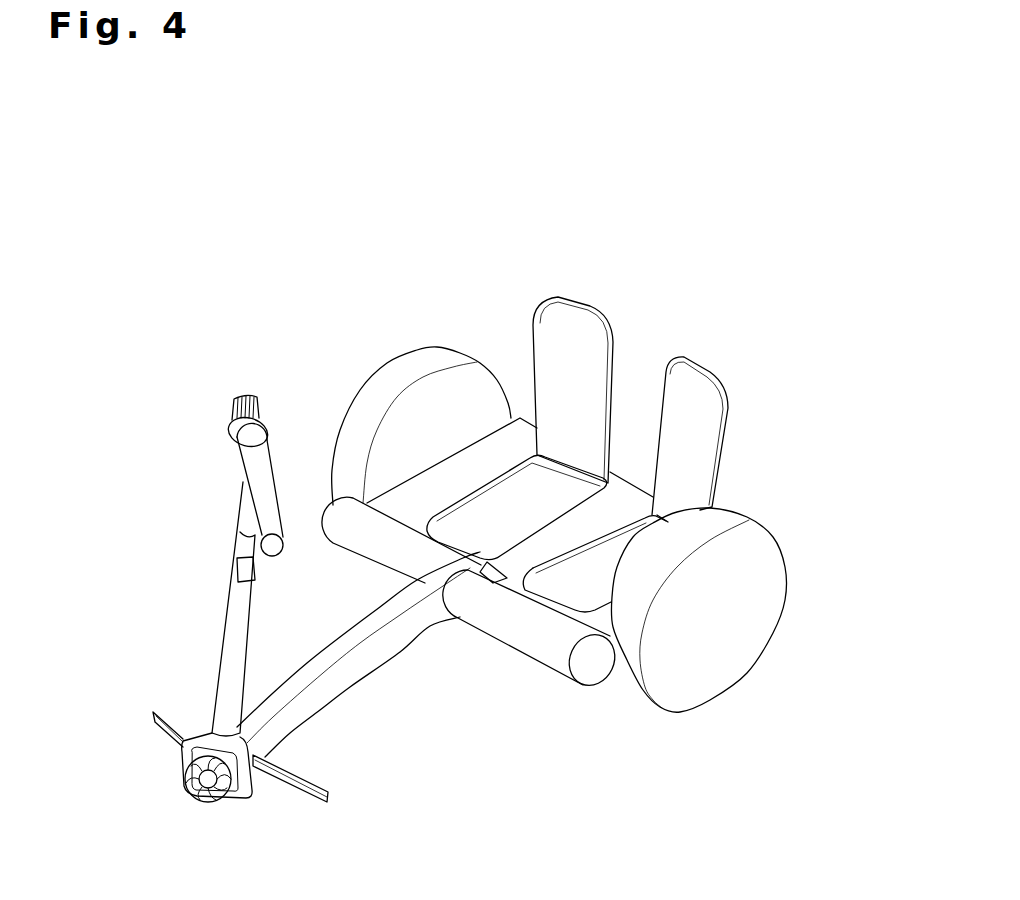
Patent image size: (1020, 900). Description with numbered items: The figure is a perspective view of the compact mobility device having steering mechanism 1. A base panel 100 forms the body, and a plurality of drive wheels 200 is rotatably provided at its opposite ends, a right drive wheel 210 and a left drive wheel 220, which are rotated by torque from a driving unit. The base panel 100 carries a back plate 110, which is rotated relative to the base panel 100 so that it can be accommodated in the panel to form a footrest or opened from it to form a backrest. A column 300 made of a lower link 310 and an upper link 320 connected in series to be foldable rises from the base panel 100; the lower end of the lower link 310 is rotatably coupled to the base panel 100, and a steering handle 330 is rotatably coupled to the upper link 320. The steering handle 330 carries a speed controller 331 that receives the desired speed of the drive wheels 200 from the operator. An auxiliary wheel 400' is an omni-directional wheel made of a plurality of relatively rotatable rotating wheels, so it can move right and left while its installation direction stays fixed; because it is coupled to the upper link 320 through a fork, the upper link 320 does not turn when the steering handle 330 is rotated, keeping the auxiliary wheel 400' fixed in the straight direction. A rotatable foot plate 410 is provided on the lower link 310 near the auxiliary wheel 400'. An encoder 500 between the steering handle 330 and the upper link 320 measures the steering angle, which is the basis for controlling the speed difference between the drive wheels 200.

The compact mobility device having steering mechanism 1 is at (118, 433).
The base panel 100 is at (517, 640).
The back plate 110 is at (670, 403).
The drive wheels 200 is at (450, 314).
The right drive wheel 210 is at (410, 375).
The left drive wheel 220 is at (748, 632).
The column 300 is at (214, 411).
The lower link 310 is at (350, 673).
The upper link 320 is at (225, 634).
The steering handle 330 is at (243, 487).
The speed controller 331 is at (243, 395).
The auxiliary wheel 400' is at (196, 809).
The foot plate 410 is at (283, 790).
The encoder 500 is at (237, 568).